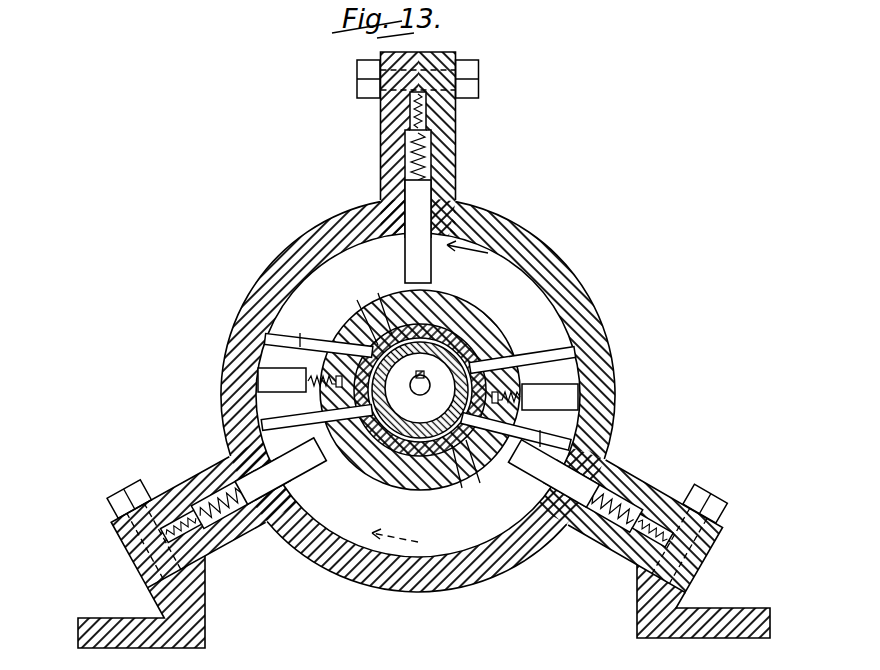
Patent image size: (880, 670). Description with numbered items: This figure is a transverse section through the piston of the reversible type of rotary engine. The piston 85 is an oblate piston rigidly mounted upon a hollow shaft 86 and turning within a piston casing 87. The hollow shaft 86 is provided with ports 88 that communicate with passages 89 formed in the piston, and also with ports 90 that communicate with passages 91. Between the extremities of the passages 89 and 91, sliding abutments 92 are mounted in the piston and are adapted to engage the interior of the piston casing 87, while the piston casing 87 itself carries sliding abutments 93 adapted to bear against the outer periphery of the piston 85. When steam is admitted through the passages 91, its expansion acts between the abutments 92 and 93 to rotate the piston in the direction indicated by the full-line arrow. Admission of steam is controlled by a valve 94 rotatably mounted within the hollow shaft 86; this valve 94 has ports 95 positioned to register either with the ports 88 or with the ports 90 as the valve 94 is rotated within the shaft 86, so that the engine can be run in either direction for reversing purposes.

The piston 85 is at (470, 330).
The hollow shaft 86 is at (475, 365).
The piston casing 87 is at (598, 345).
The ports 88 is at (512, 340).
The passages 89 is at (560, 352).
The ports 90 is at (368, 353).
The passages 91 is at (312, 338).
The sliding abutments 92 is at (565, 396).
The sliding abutments 93 is at (418, 208).
The valve 94 is at (455, 315).
The ports 95 is at (390, 375).